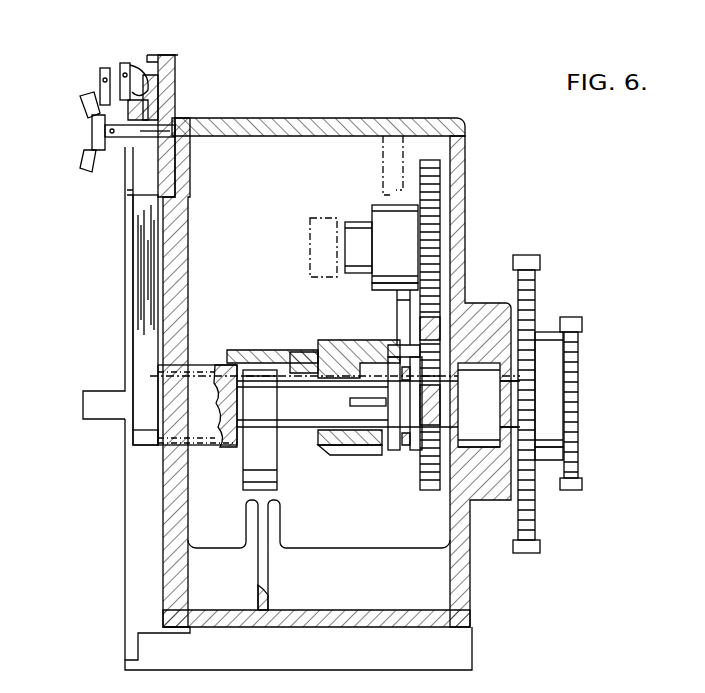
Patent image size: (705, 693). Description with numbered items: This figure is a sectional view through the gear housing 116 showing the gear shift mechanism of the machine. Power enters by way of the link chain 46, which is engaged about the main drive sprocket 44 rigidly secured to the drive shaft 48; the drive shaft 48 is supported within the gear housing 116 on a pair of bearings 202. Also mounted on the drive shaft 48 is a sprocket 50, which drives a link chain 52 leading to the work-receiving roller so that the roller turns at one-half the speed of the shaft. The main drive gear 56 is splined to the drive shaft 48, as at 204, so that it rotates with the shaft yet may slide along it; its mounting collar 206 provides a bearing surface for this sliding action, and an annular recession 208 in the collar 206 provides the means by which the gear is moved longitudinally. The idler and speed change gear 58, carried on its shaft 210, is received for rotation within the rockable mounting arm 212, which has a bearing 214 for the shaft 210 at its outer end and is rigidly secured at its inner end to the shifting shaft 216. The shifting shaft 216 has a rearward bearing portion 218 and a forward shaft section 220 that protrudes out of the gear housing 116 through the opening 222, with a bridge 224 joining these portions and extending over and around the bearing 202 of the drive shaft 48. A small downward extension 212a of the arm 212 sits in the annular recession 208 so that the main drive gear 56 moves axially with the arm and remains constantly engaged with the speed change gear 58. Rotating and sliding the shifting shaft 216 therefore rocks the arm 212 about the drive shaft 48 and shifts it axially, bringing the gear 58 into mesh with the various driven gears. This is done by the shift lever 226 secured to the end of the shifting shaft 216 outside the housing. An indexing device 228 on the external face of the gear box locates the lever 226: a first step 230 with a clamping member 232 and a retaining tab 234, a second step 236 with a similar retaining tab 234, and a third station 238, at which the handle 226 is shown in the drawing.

The gear housing 116 is at (359, 116).
The shift lever 226 is at (137, 298).
The shaft section 220 is at (197, 380).
The opening 222 is at (195, 335).
The drive shaft 48 is at (308, 415).
The bearings 202 is at (258, 465).
The shifting shaft 216 is at (243, 350).
The bridge 224 is at (280, 350).
The shaft 210 is at (350, 222).
The bearing 214 is at (398, 254).
The rockable mounting arm 212 is at (400, 303).
The downward extension 212a is at (400, 341).
The idler and speed change gear 58 is at (403, 127).
The main drive gear 56 is at (436, 492).
The annular recession 208 is at (395, 450).
The mounting collar 206 is at (416, 450).
The bearing portion 218 is at (322, 447).
The spline 204 is at (368, 406).
The main drive sprocket 44 is at (538, 280).
The link chain 46 is at (527, 257).
The sprocket 50 is at (572, 360).
The link chain 52 is at (575, 318).
The third station 238 is at (172, 96).
The second step 236 is at (146, 85).
The retaining tab 234 is at (100, 100).
The step 230 is at (117, 90).
The indexing device 228 is at (76, 76).
The clamping member 232 is at (82, 162).